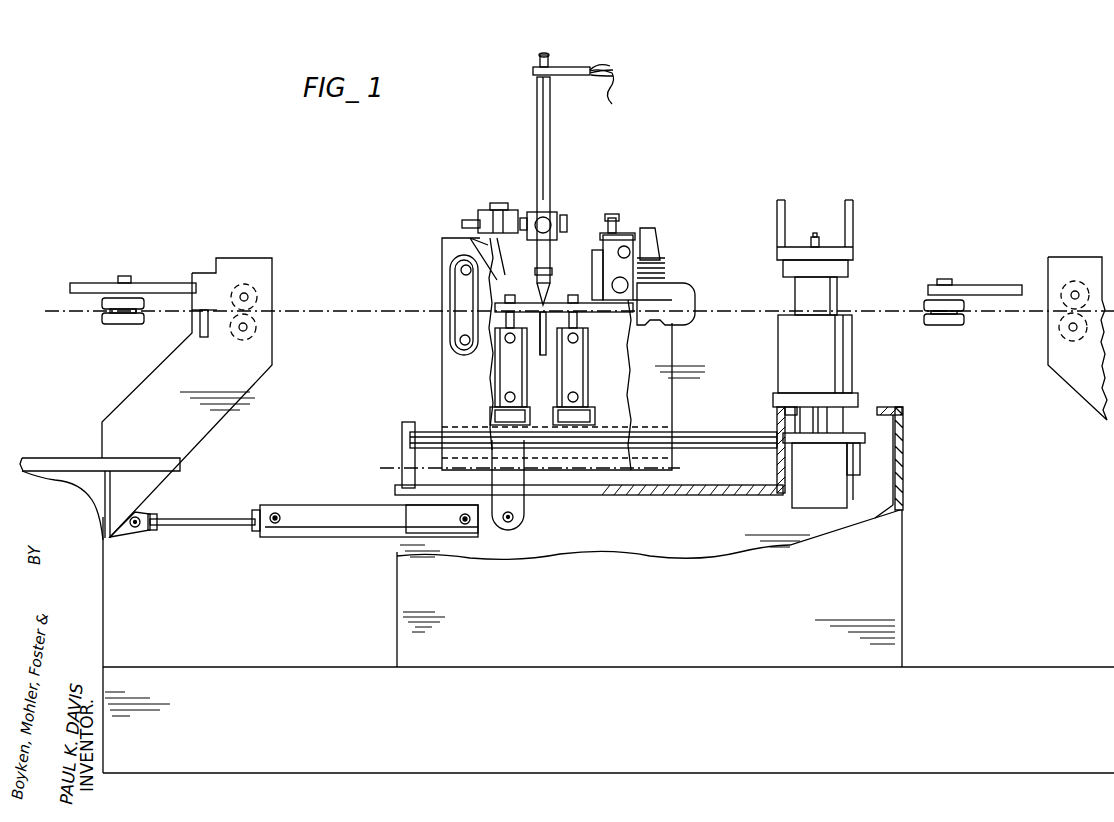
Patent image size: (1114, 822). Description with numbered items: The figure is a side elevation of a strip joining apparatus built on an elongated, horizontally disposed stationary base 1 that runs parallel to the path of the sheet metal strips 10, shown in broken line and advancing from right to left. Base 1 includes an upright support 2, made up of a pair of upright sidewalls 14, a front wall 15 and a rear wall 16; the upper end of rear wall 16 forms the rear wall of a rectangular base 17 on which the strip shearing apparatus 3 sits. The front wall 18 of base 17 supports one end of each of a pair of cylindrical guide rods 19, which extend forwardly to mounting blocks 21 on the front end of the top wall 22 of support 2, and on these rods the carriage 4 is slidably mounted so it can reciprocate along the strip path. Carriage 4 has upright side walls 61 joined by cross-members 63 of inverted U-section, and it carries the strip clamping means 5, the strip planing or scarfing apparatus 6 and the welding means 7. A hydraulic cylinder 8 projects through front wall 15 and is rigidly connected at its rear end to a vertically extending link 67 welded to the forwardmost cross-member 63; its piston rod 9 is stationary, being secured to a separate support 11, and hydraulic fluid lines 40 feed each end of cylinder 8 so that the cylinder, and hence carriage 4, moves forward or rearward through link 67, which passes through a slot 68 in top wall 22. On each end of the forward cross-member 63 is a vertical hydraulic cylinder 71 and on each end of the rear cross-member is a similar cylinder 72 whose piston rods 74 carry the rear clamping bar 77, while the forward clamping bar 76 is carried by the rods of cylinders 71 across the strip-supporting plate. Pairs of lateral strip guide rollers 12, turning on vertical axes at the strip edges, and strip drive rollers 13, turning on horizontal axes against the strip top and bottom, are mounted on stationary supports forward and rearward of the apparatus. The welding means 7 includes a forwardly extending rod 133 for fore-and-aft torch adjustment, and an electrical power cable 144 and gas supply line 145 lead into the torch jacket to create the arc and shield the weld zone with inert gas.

The stationary base 1 is at (944, 652).
The upright support 2 is at (918, 572).
The strip shearing apparatus 3 is at (862, 362).
The carriage 4 is at (438, 352).
The strip clamping means 5 is at (875, 240).
The strip planing or scarfing apparatus 6 is at (664, 251).
The welding means 7 is at (557, 300).
The hydraulic cylinder 8 is at (325, 505).
The piston rod 9 is at (214, 518).
The sheet metal strips 10 is at (296, 308).
The separate support 11 is at (97, 579).
The lateral strip guide rollers 12 is at (124, 326).
The strip feed or drive rollers 13 is at (270, 321).
The upright sidewalls 14 is at (672, 611).
The front wall 15 is at (395, 582).
The rear wall 16 is at (904, 533).
The rectangular base 17 is at (898, 410).
The front wall of base 17 18 is at (777, 418).
The cylindrical guide rods 19 is at (688, 430).
The mounting blocks 21 is at (410, 432).
The top wall 22 is at (705, 496).
The hydraulic fluid lines 40 is at (280, 512).
The upright side walls 61 is at (674, 360).
The cross-members 63 is at (548, 412).
The link 67 is at (505, 497).
The slot 68 is at (575, 492).
The vertical hydraulic cylinder 71 is at (500, 366).
The hydraulic cylinder 72 is at (590, 370).
The piston rod 74 is at (548, 338).
The forward clamping bar 76 is at (505, 300).
The rear clamping bar 77 is at (570, 300).
The rod 133 is at (467, 222).
The electrical power cable 144 is at (591, 96).
The gas supply line 145 is at (614, 74).